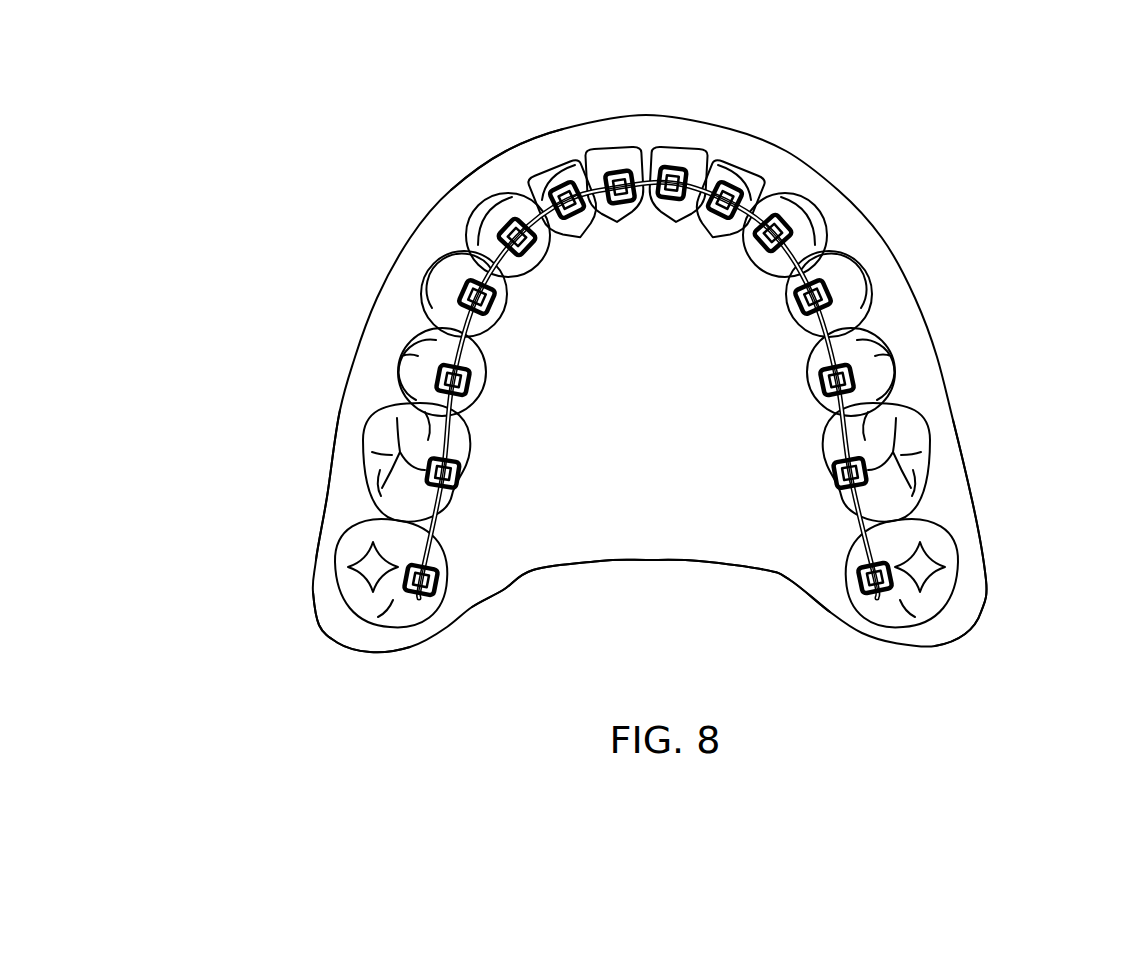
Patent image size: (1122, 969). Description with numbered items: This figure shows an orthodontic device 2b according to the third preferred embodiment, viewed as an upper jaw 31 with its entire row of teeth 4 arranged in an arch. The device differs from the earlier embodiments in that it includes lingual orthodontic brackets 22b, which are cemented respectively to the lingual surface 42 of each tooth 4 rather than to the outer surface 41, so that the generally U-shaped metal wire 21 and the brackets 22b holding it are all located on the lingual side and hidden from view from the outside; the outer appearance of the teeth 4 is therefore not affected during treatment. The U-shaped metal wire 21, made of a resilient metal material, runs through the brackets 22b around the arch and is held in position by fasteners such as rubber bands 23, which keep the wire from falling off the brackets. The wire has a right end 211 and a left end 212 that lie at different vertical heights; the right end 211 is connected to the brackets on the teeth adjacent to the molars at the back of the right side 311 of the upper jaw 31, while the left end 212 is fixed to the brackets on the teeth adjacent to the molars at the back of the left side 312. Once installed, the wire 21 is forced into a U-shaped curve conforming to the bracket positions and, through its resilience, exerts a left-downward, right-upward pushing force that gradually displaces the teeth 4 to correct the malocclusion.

The orthodontic device 2b is at (506, 511).
The U-shaped metal wire 21 is at (847, 327).
The right end 211 is at (865, 513).
The left end 212 is at (365, 508).
The lingual orthodontic brackets 22b is at (430, 465).
The rubber bands 23 is at (427, 476).
The upper jaw 31 is at (530, 160).
The right side 311 is at (973, 603).
The left side 312 is at (332, 612).
The teeth 4 is at (481, 209).
The outer surface 41 is at (488, 195).
The lingual surface 42 is at (483, 234).